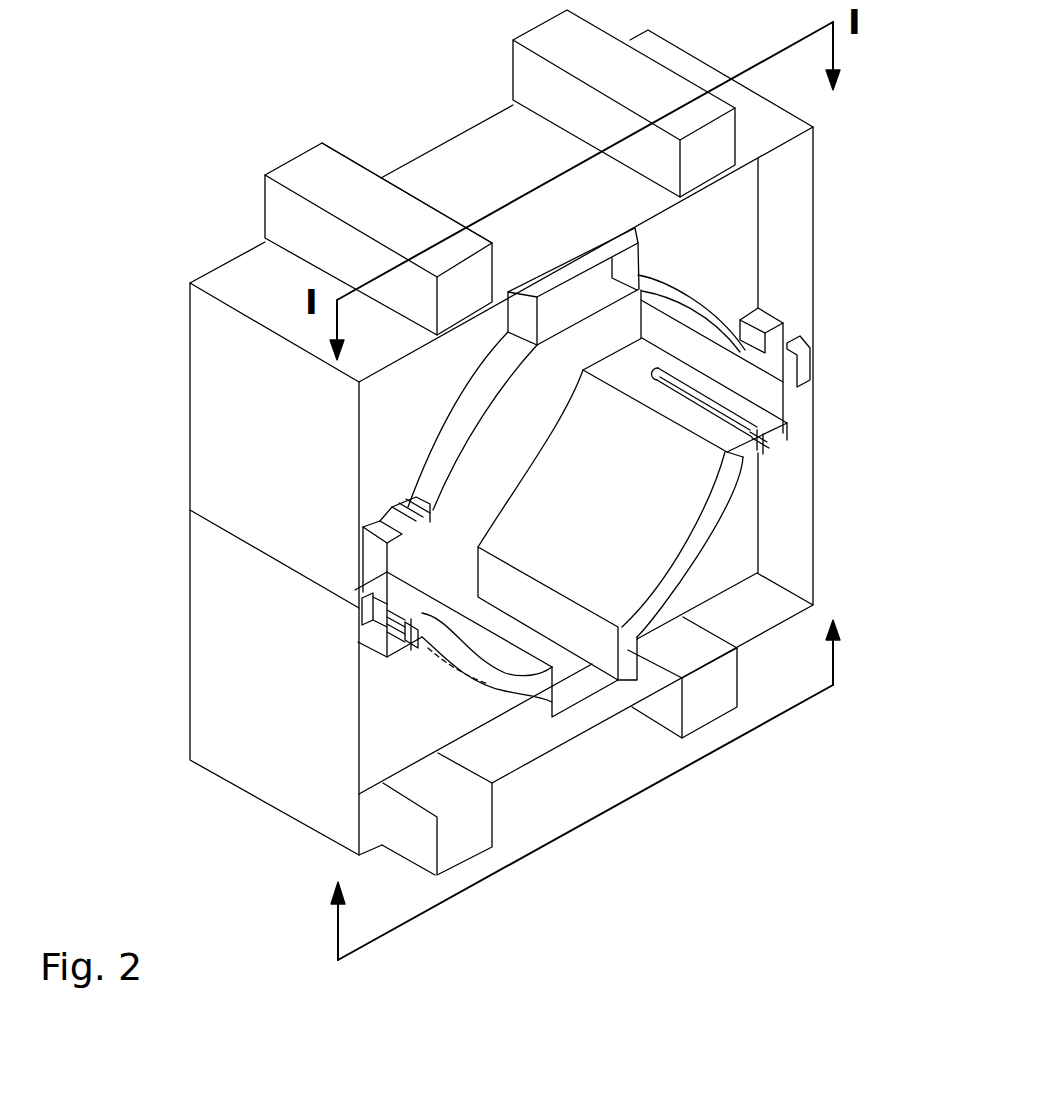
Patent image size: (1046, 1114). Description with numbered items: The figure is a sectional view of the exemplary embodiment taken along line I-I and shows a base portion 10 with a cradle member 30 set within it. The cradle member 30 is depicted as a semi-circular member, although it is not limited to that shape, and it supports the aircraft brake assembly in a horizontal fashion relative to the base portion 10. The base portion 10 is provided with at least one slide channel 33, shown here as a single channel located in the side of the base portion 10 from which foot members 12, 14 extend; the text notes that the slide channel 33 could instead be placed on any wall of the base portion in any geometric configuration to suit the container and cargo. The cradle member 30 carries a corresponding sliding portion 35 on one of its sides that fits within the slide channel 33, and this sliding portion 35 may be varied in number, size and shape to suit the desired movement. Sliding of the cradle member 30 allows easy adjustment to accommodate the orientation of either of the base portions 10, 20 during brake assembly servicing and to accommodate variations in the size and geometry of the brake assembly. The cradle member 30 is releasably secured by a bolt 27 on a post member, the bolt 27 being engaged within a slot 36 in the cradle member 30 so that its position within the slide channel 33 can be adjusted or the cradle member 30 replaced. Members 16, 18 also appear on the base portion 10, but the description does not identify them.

The base portion 10 is at (250, 775).
The foot member 12 is at (475, 845).
The foot member 14 is at (710, 727).
The upper bar 16 is at (340, 183).
The upper bar 18 is at (597, 75).
The base portion 20 is at (437, 154).
The bolt 27 is at (783, 442).
The cradle member 30 is at (735, 279).
The slide channel 33 is at (587, 262).
The sliding portion 35 is at (594, 702).
The slot 36 is at (784, 408).